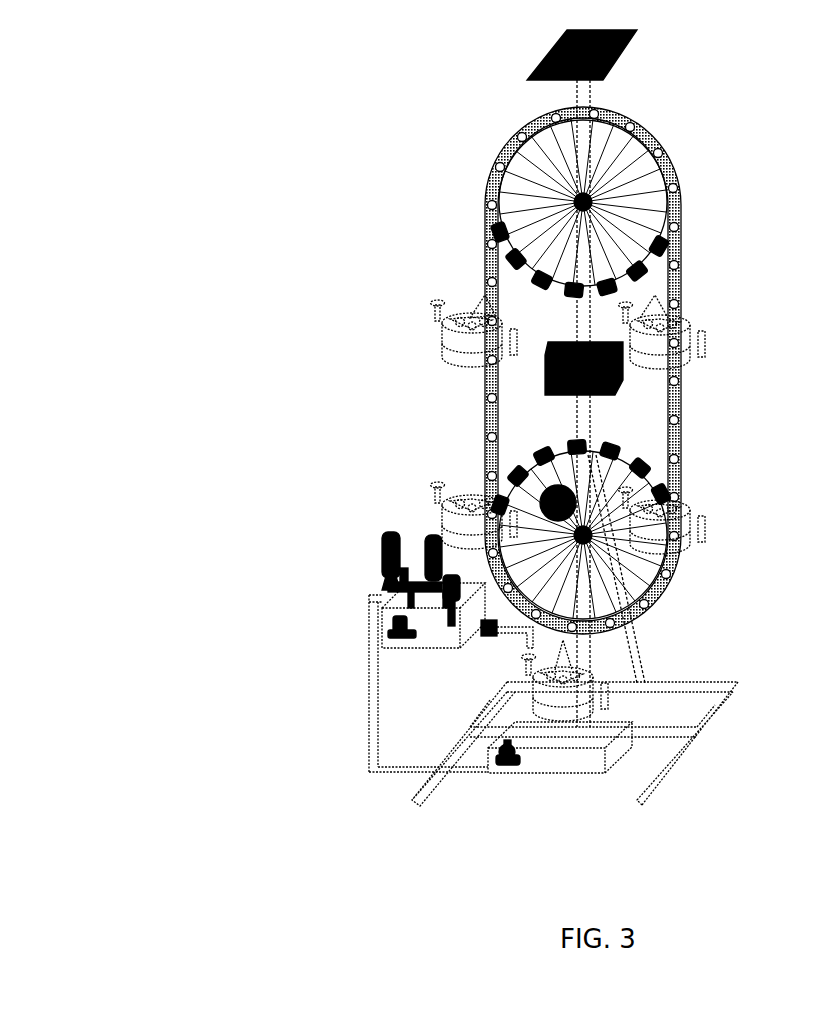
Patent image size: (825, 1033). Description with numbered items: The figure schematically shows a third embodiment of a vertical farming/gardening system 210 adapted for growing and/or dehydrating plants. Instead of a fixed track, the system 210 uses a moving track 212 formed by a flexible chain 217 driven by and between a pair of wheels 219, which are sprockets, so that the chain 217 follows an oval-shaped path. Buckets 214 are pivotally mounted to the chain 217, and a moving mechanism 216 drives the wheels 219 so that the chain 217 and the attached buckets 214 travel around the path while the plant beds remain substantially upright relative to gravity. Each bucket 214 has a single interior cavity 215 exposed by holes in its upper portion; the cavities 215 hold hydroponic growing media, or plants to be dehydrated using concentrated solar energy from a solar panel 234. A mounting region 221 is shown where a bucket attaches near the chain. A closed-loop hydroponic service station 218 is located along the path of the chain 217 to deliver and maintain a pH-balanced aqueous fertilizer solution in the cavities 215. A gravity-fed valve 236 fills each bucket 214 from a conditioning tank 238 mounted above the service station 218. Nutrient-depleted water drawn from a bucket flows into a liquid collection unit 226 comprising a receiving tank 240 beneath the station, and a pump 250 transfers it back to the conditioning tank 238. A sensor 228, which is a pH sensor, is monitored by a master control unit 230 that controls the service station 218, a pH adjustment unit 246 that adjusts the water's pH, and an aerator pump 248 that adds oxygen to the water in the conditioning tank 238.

The vertical farming/gardening system 210 is at (183, 110).
The moving track 212 is at (488, 133).
The buckets 214 is at (468, 360).
The interior cavity 215 is at (455, 346).
The moving mechanism 216 is at (570, 488).
The chain 217 is at (667, 155).
The service station 218 is at (453, 803).
The wheels (sprockets) 219 is at (513, 268).
The mounting bracket 221 is at (478, 328).
The liquid collection unit 226 is at (634, 754).
The sensor 228 is at (450, 563).
The master control unit 230 is at (628, 380).
The solar panel 234 is at (623, 66).
The gravity-fed valve 236 is at (478, 642).
The conditioning tank 238 is at (420, 652).
The receiving tank 240 is at (596, 772).
The pH adjustment unit 246 is at (372, 558).
The aerator pump 248 is at (388, 625).
The pump 250 is at (512, 765).